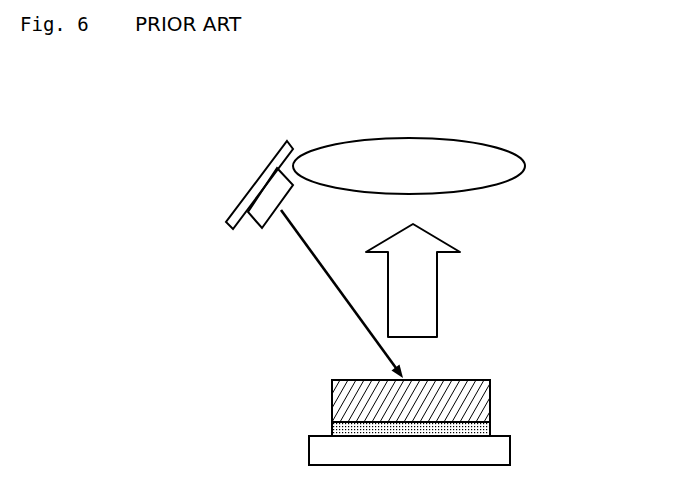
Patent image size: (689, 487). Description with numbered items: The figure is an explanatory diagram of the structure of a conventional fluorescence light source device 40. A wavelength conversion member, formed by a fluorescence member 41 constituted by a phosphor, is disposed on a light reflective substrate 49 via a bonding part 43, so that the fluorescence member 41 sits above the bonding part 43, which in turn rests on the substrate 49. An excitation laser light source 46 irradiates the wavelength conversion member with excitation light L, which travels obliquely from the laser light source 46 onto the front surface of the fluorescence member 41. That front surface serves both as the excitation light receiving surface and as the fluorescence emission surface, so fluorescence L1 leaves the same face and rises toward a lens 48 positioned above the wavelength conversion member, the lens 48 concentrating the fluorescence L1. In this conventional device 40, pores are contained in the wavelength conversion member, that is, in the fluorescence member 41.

The fluorescence light source device 40 is at (217, 117).
The excitation laser light source 46 is at (237, 203).
The lens 48 is at (525, 163).
The fluorescence member 41 is at (490, 392).
The bonding part 43 is at (490, 427).
The light reflective substrate 49 is at (505, 448).
The excitation light L is at (327, 278).
The fluorescence L1 is at (422, 301).